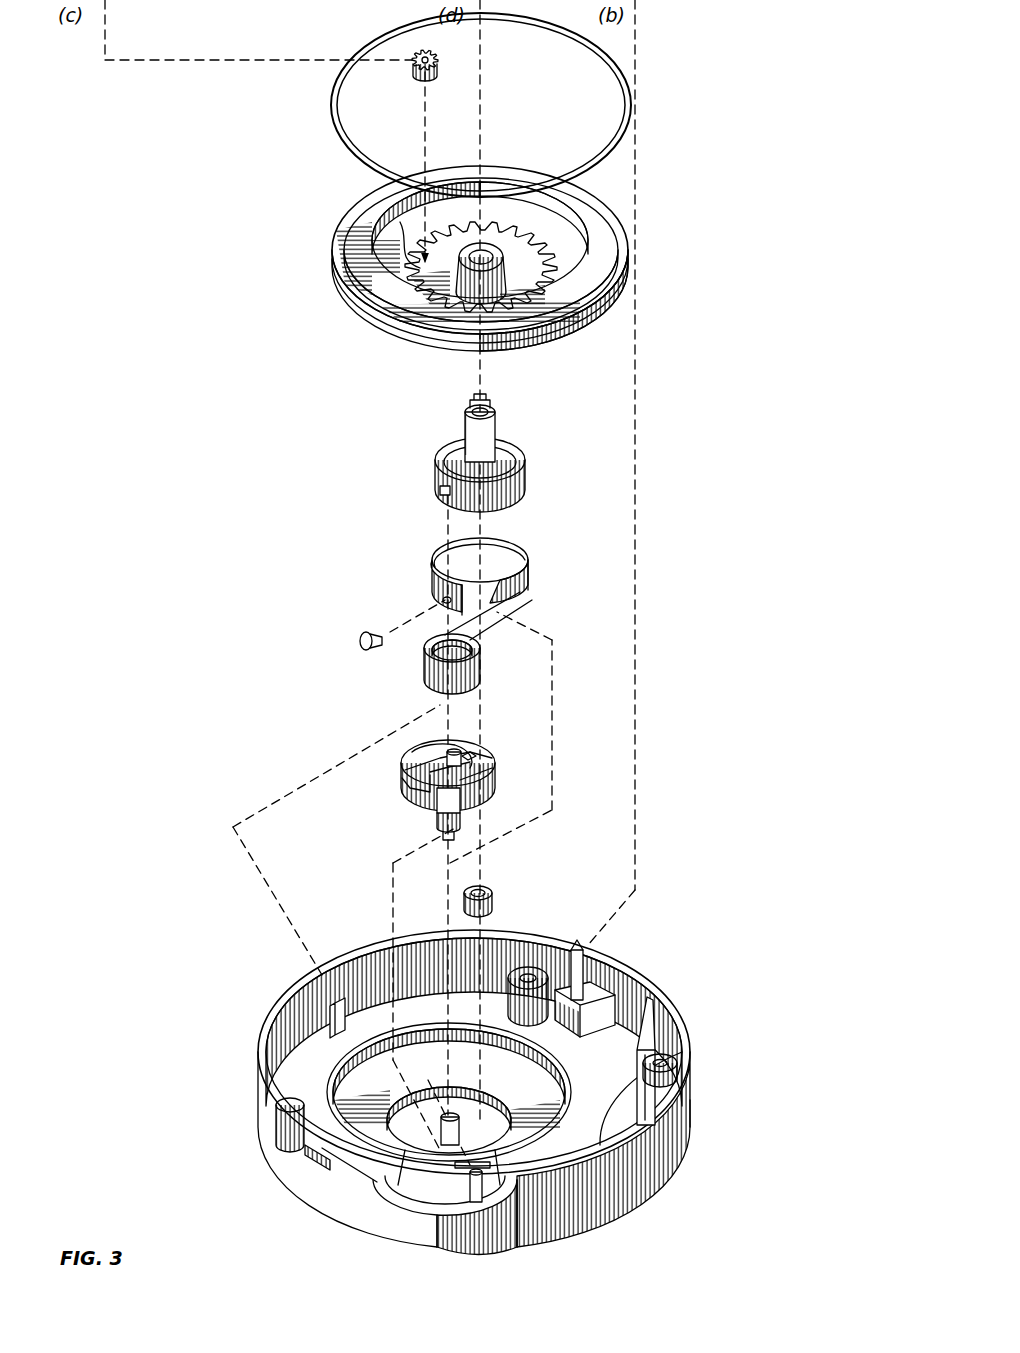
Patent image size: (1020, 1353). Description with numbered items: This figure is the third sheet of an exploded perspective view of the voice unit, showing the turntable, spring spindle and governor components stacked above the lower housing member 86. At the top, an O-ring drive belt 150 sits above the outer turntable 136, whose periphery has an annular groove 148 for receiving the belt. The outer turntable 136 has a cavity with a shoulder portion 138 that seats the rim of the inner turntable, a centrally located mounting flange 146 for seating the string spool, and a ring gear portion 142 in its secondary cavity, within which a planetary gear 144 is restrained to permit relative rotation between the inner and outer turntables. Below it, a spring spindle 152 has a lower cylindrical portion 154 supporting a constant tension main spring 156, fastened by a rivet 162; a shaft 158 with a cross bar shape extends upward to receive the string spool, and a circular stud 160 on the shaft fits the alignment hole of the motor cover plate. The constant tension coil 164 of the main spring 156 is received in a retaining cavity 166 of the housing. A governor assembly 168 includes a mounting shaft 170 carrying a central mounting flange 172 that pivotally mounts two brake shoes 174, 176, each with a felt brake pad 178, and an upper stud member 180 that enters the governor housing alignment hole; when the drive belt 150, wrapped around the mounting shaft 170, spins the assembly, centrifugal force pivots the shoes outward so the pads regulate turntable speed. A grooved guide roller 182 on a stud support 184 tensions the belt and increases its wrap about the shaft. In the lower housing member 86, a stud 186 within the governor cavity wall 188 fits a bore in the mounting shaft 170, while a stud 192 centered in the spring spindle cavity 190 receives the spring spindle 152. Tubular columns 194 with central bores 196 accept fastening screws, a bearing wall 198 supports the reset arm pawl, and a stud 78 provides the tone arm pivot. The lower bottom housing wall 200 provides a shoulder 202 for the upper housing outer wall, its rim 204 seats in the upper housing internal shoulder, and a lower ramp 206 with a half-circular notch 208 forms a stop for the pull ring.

The stud 78 is at (586, 955).
The lower housing member 86 is at (457, 1073).
The outer turntable 136 is at (603, 231).
The shoulder portion 138 is at (566, 214).
The ring gear portion 142 is at (560, 286).
The planetary gear 144 is at (398, 42).
The mounting flange 146 is at (402, 226).
The annular groove 148 is at (400, 281).
The O-ring drive belt 150 is at (330, 121).
The spring spindle 152 is at (473, 437).
The lower cylindrical portion 154 is at (525, 488).
The constant tension main spring 156 is at (528, 556).
The shaft 158 is at (470, 460).
The circular stud 160 is at (470, 410).
The rivet 162 is at (356, 641).
The constant tension coil 164 is at (480, 664).
The retaining cavity 166 is at (413, 1175).
The governor assembly 168 is at (416, 790).
The mounting shaft 170 is at (450, 840).
The central mounting flange 172 is at (412, 766).
The brake shoe 174 is at (422, 746).
The brake shoe 176 is at (486, 772).
The brake pad 178 is at (445, 806).
The upper stud member 180 is at (468, 752).
The guide roller 182 is at (490, 884).
The stud support 184 is at (548, 1098).
The stud 186 is at (440, 1212).
The governor cavity wall 188 is at (505, 1226).
The spring spindle cavity 190 is at (472, 1092).
The stud 192 is at (448, 1112).
The tubular column 194 is at (528, 968).
The central bore 196 is at (658, 1002).
The bearing wall 198 is at (602, 990).
The lower bottom housing wall 200 is at (692, 1092).
The shoulder 202 is at (680, 1062).
The rim 204 is at (692, 1150).
The lower ramp 206 is at (302, 1160).
The half-circular notch 208 is at (276, 1122).